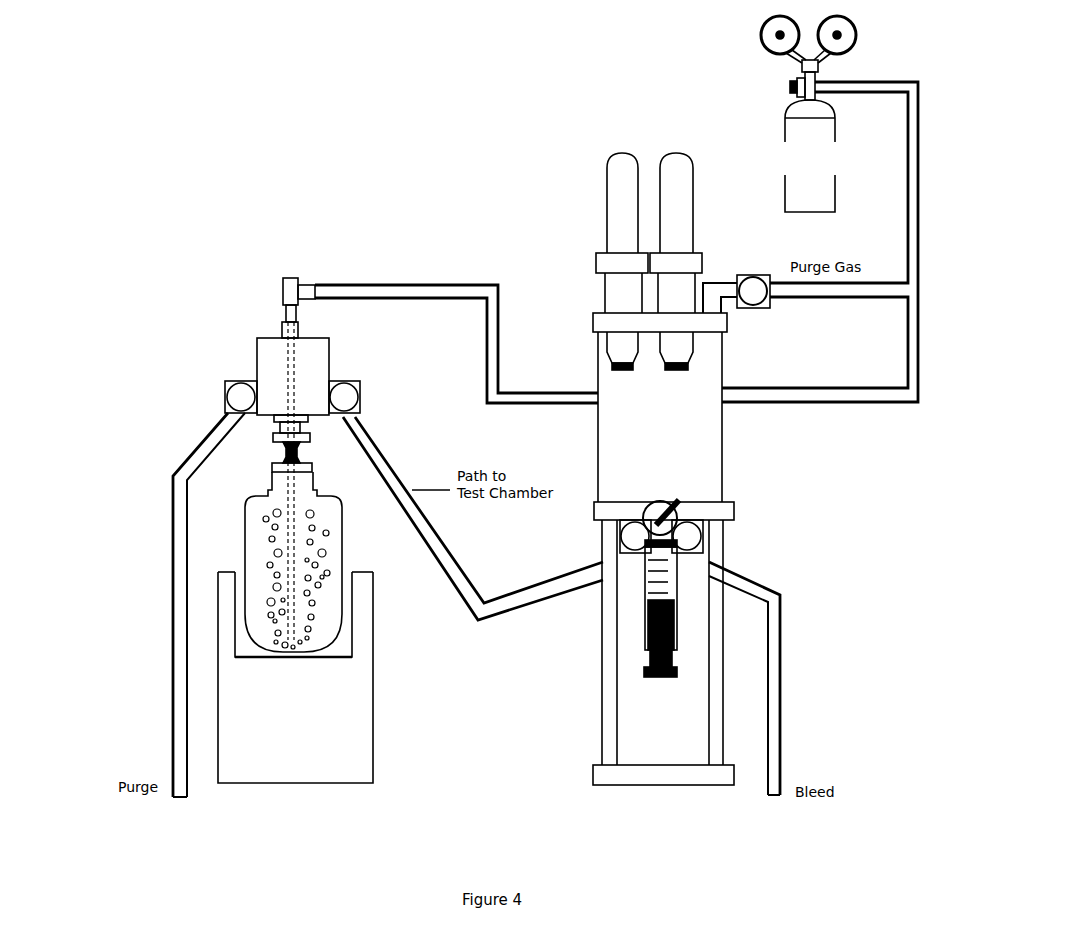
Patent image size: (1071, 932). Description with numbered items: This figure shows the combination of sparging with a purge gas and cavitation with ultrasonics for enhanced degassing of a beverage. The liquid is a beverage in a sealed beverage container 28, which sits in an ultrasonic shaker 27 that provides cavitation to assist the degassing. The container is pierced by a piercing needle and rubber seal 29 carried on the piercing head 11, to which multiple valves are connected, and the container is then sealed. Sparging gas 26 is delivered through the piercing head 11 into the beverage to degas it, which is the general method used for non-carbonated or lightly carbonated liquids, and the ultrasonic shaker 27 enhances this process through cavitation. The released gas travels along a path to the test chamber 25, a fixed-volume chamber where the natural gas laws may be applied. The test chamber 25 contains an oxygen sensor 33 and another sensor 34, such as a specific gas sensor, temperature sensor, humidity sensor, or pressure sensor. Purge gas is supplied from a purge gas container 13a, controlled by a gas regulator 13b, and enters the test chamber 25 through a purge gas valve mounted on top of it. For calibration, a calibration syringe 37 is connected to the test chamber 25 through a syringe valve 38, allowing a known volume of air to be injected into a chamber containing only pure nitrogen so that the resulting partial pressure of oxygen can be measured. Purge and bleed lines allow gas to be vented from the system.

The piercing head 11 is at (255, 363).
The piercing needle and rubber seal 29 is at (280, 452).
The beverage container 28 is at (242, 540).
The ultrasonic shaker 27 is at (295, 677).
The sparging gas 26 is at (456, 331).
The oxygen sensor 33 is at (604, 228).
The other sensor 34 is at (696, 235).
The test chamber 25 is at (663, 416).
The gas regulator 13b is at (790, 88).
The purge gas container 13a is at (807, 156).
The syringe valve 38 is at (682, 507).
The calibration syringe 37 is at (680, 642).